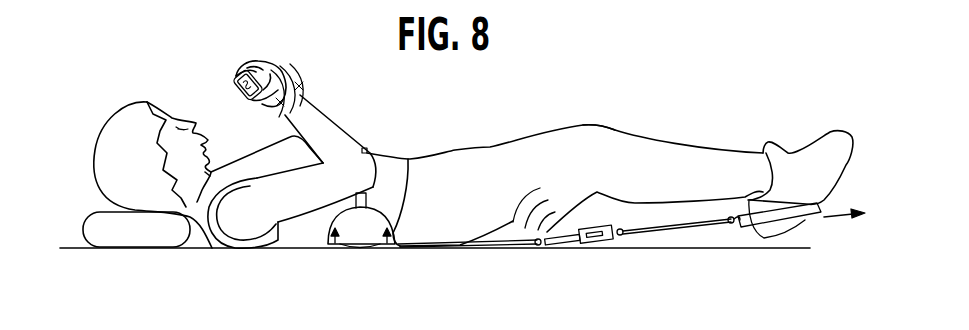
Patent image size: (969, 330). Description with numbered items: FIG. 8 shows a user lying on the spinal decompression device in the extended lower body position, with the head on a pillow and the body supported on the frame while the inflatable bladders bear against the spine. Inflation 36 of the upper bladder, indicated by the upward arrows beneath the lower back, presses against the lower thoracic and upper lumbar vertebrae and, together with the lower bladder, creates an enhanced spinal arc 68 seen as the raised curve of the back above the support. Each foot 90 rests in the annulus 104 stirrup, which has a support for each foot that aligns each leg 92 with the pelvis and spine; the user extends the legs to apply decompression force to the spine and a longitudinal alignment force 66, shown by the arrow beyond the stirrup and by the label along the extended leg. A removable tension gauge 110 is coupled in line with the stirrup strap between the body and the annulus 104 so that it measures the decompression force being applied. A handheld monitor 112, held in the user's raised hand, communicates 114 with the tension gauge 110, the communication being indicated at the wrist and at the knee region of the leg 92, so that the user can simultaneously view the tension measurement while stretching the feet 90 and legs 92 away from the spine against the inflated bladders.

The handheld monitor 112 is at (235, 82).
The communication 114 is at (298, 83).
The longitudinal alignment force 66 is at (556, 143).
The leg 92 is at (613, 140).
The foot 90 is at (840, 135).
The annulus 104 is at (818, 220).
The tension gauge 110 is at (611, 240).
The enhanced spinal arc 68 is at (336, 207).
The inflation 36 is at (343, 250).